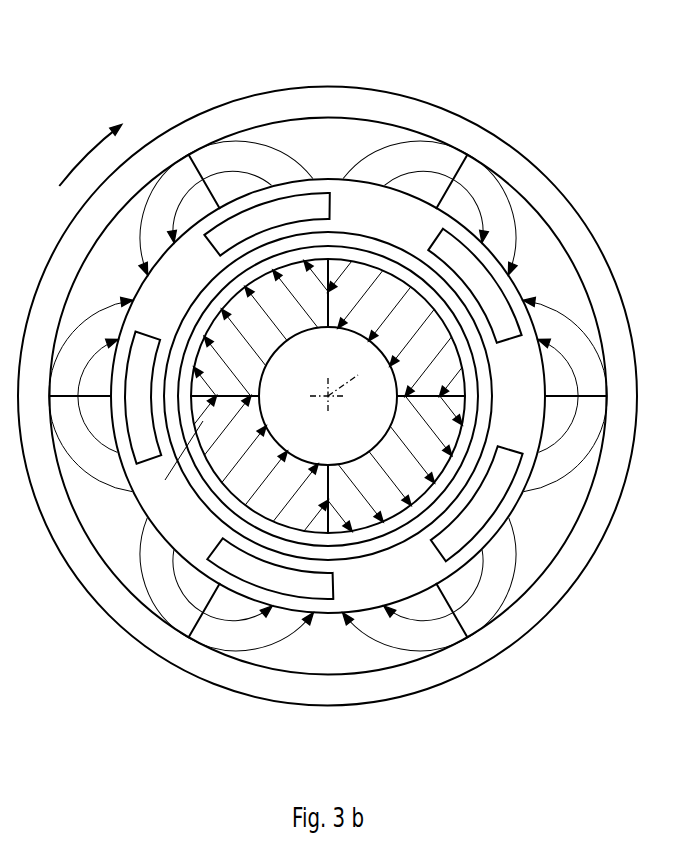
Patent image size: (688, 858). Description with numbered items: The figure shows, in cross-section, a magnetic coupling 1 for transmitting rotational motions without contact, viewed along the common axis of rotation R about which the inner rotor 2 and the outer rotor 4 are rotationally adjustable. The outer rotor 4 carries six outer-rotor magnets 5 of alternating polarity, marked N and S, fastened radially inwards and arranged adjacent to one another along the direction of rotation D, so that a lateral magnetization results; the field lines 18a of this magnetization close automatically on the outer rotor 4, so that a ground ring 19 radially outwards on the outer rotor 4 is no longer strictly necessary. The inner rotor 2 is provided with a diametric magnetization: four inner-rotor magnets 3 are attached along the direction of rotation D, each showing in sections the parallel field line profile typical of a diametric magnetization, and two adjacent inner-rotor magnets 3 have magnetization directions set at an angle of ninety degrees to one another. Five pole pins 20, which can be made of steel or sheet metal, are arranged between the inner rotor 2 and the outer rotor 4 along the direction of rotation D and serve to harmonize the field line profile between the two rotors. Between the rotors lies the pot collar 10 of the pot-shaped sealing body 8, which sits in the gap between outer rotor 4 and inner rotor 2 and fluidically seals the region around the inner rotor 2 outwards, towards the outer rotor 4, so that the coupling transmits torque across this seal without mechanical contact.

The magnetic coupling 1 is at (590, 122).
The inner rotor 2 is at (302, 344).
The inner-rotor magnet 3 is at (261, 386).
The outer rotor 4 is at (593, 284).
The outer-rotor magnet 5 is at (98, 264).
The sealing body 8 is at (490, 482).
The pot collar 10 is at (480, 432).
The field lines 18a is at (163, 600).
The ground ring 19 is at (456, 120).
The pole pins 20 is at (331, 207).
The direction of rotation D is at (85, 155).
The axis of rotation R is at (348, 372).